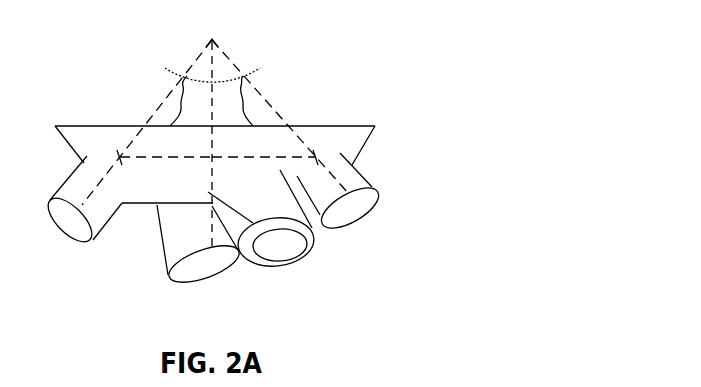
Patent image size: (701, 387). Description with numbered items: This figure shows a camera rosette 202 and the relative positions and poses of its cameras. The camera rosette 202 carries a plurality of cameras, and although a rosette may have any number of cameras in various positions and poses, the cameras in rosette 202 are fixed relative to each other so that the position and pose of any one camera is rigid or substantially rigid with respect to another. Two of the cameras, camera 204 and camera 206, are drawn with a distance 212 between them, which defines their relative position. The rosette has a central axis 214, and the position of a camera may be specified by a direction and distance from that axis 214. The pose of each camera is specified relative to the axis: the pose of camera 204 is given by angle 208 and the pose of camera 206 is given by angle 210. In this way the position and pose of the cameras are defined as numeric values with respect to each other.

The camera rosette 202 is at (347, 126).
The camera 204 is at (97, 240).
The camera 206 is at (372, 210).
The angle 208 is at (164, 149).
The angle 210 is at (215, 143).
The distance 212 is at (317, 226).
The axis 214 is at (253, 262).